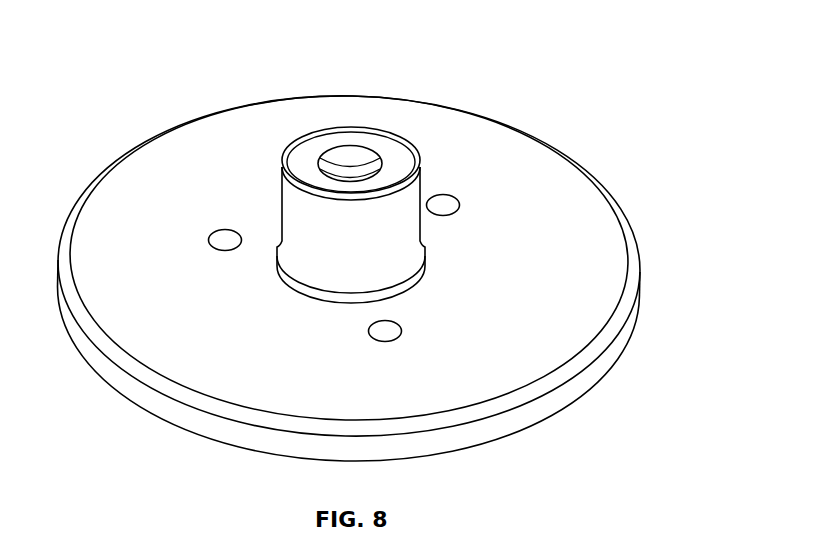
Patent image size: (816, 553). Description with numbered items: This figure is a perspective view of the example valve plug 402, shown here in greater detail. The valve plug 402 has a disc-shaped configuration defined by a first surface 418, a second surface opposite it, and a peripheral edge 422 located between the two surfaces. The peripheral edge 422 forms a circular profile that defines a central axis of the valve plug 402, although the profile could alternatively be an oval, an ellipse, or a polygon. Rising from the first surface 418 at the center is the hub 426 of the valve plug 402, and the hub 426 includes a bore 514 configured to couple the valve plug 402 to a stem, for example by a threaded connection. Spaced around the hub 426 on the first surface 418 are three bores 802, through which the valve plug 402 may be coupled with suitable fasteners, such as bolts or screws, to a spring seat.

The valve plug 402 is at (621, 85).
The first surface 418 is at (577, 291).
The peripheral edge 422 is at (593, 369).
The hub 426 is at (308, 255).
The bore 514 is at (350, 162).
The bores 802 is at (216, 231).